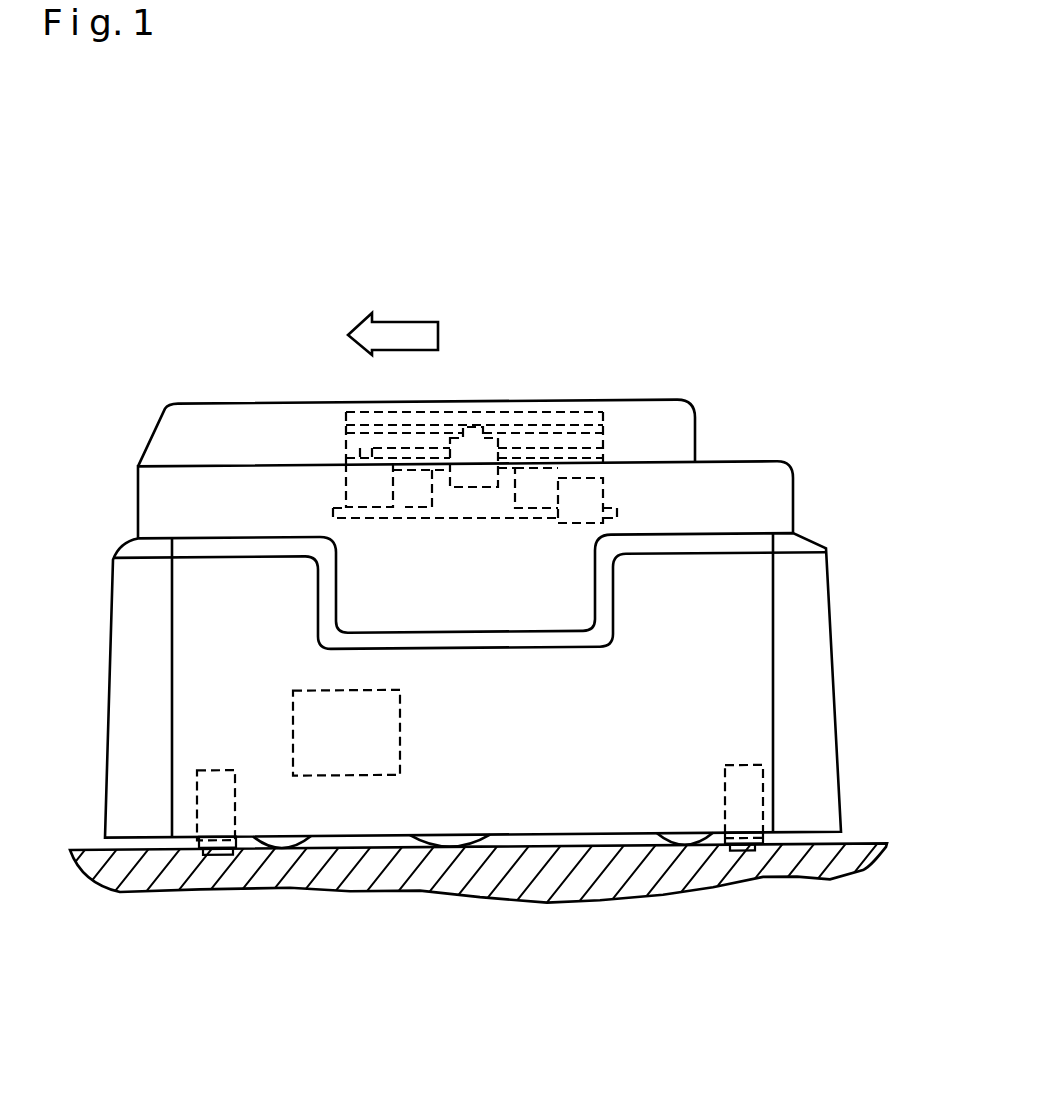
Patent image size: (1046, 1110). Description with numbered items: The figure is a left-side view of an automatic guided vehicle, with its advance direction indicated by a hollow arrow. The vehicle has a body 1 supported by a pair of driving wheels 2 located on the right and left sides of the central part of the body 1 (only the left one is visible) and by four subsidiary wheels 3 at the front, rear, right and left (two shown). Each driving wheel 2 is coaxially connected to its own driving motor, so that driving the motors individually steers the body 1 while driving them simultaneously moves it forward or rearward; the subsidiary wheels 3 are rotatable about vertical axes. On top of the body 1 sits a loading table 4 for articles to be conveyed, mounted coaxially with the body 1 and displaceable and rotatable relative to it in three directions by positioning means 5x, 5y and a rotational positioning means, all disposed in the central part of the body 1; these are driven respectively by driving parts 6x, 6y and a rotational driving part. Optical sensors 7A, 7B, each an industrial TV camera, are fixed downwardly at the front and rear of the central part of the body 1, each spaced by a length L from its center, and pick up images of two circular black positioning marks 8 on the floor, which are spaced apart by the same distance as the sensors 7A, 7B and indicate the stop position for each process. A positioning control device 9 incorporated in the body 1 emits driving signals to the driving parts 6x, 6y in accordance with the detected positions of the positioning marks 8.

The body 1 is at (820, 627).
The driving wheels 2 is at (451, 842).
The subsidiary wheels 3 is at (287, 842).
The loading table 4 is at (655, 412).
The positioning means 5x is at (347, 440).
The positioning means 5y is at (505, 417).
The driving part 6x is at (363, 482).
The driving part 6y is at (463, 428).
The optical sensor 7A is at (208, 793).
The optical sensor 7B is at (753, 798).
The positioning marks 8 is at (227, 855).
The positioning control device 9 is at (310, 732).